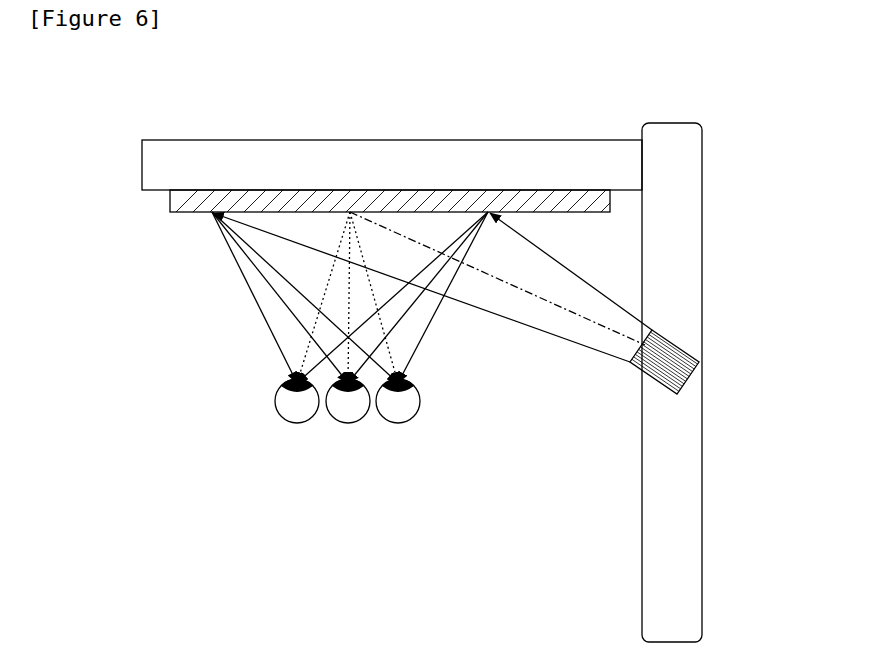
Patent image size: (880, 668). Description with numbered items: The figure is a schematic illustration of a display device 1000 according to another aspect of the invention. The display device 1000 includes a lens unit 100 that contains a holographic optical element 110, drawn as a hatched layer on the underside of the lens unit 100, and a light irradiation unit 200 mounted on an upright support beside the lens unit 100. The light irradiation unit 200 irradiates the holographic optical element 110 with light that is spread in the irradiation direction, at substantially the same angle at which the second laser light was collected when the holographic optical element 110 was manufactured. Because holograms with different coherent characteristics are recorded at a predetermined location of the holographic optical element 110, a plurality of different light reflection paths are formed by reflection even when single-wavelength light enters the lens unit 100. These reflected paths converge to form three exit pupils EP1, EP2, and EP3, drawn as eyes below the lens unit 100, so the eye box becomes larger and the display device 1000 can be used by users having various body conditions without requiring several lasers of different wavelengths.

The display device 1000 is at (80, 78).
The lens unit 100 is at (342, 180).
The holographic optical element 110 is at (361, 205).
The light irradiation unit 200 is at (694, 370).
The exit pupil EP1 is at (297, 416).
The exit pupil EP2 is at (348, 416).
The exit pupil EP3 is at (398, 416).